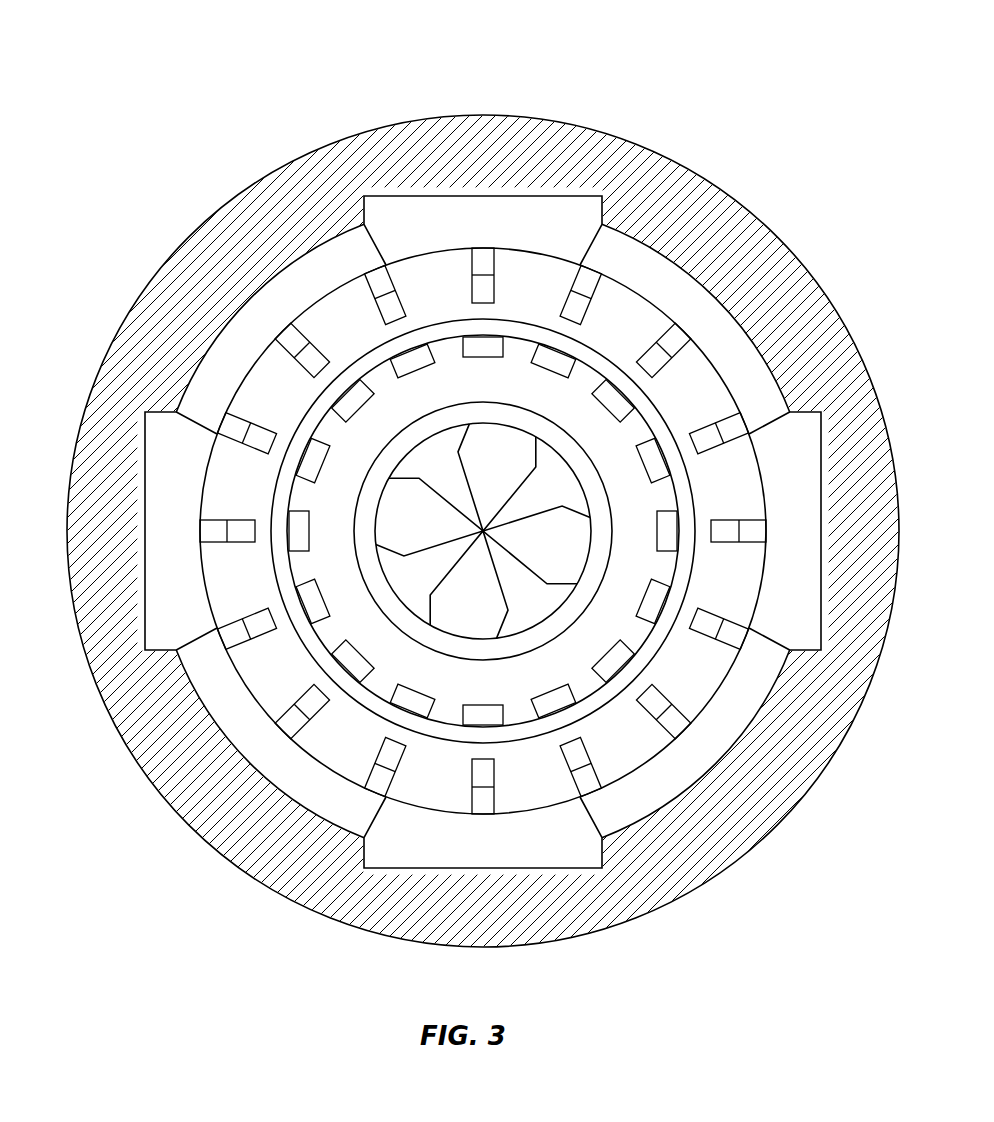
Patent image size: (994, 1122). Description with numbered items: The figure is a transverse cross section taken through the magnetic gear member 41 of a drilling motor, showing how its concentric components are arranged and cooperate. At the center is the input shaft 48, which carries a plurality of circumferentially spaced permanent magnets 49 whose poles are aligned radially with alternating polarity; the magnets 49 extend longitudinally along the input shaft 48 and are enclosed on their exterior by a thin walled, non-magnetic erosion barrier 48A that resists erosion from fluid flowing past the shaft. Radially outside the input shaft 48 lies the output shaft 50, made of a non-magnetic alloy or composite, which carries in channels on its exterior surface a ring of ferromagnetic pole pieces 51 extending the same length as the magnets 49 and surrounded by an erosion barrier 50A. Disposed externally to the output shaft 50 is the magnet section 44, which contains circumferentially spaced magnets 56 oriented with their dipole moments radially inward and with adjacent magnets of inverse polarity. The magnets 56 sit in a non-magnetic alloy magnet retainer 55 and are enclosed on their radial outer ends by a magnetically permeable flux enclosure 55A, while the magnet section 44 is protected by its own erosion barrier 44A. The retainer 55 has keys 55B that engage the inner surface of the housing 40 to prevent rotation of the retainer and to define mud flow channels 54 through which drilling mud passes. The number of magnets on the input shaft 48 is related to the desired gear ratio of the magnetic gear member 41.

The magnetic gear member 41 is at (167, 36).
The housing 40 is at (141, 288).
The magnet section 44 is at (202, 463).
The erosion barrier 44A is at (648, 397).
The mud flow channels 54 is at (233, 713).
The magnet retainer 55 is at (232, 598).
The flux enclosure 55A is at (522, 813).
The keys 55B is at (417, 857).
The magnets 56 is at (203, 533).
The output shaft 50 is at (333, 600).
The erosion barrier 50A is at (655, 612).
The pole pieces 51 is at (307, 592).
The input shaft 48 is at (583, 547).
The erosion barrier 48A is at (543, 627).
The permanent magnets 49 is at (440, 623).